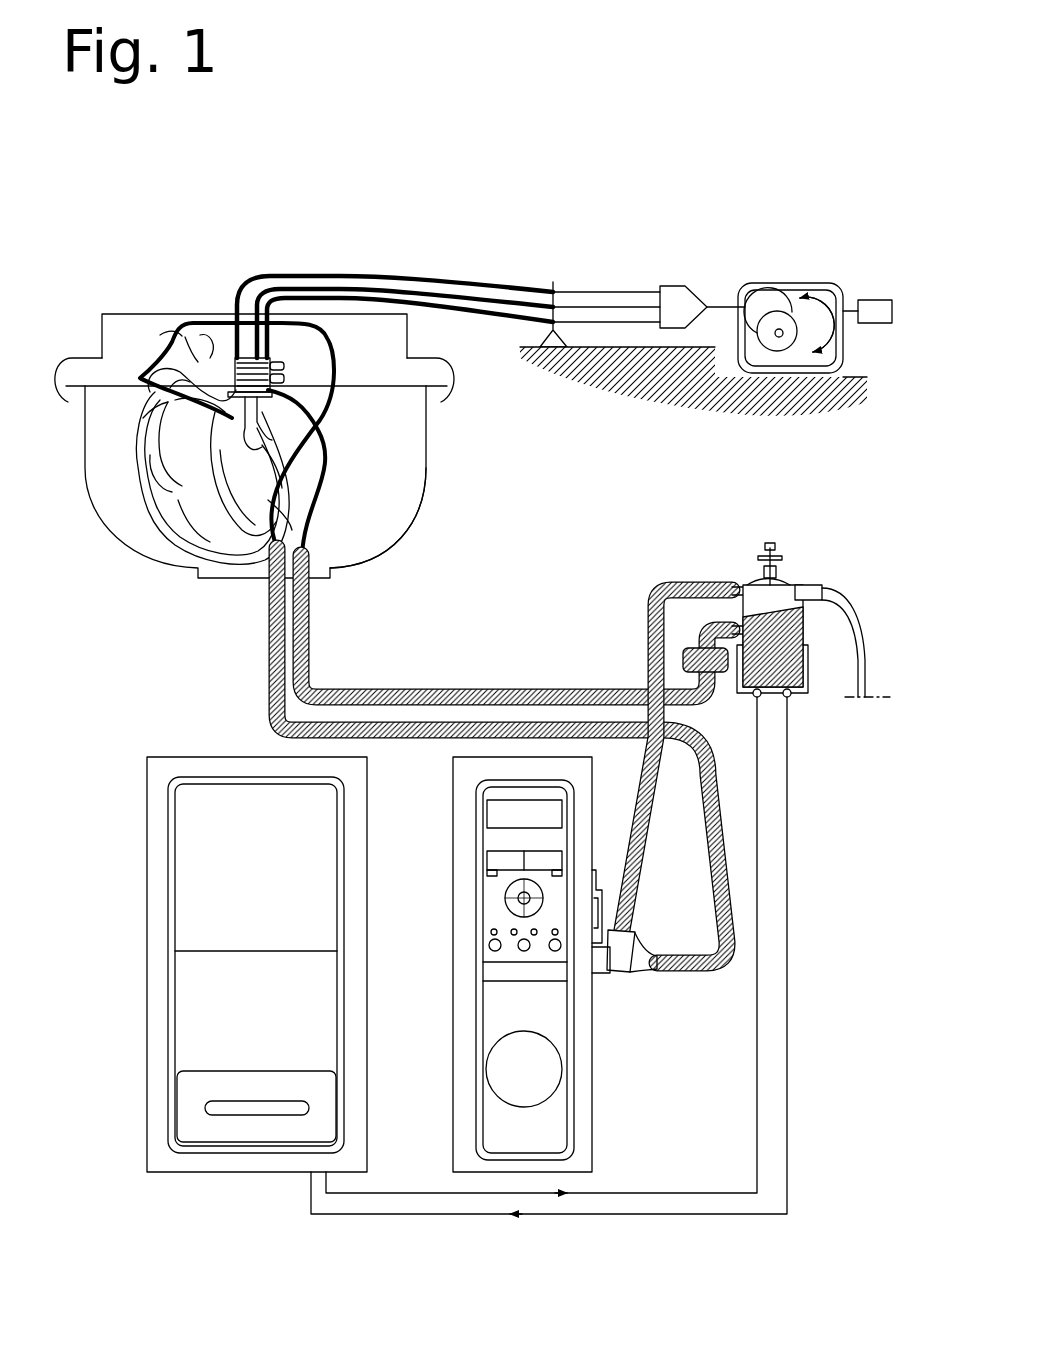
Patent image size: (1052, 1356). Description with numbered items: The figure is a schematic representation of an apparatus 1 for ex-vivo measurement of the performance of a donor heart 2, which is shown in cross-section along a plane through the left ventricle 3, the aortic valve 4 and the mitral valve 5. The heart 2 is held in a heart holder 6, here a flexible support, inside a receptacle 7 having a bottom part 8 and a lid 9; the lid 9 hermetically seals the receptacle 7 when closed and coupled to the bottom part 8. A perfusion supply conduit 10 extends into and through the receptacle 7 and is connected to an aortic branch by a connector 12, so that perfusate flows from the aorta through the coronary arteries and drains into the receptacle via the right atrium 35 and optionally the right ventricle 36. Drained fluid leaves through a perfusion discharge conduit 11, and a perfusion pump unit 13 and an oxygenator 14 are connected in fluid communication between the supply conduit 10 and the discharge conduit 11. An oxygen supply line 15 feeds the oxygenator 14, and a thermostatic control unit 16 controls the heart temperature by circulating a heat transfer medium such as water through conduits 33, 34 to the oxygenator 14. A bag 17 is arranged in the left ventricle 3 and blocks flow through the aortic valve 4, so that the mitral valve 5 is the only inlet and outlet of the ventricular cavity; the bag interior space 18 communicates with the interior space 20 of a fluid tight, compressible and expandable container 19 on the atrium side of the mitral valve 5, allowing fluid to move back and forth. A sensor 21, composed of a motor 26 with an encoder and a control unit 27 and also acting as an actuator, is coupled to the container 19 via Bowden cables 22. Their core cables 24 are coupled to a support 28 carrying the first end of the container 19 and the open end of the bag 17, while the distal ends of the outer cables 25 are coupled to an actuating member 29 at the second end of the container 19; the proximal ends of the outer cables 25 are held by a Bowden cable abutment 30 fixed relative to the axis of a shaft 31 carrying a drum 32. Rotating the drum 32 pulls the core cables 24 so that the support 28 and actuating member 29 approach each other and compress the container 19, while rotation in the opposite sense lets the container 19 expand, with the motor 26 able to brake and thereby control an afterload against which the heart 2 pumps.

The apparatus 1 is at (388, 210).
The donor heart 2 is at (132, 482).
The left ventricle 3 is at (258, 513).
The aortic valve 4 is at (212, 415).
The mitral valve 5 is at (262, 426).
The heart holder 6 is at (290, 525).
The receptacle 7 is at (423, 477).
The bottom part 8 is at (398, 522).
The lid 9 is at (107, 307).
The perfusion supply conduit 10 is at (310, 624).
The perfusion discharge conduit 11 is at (270, 645).
The connector 12 is at (167, 333).
The perfusion pump unit 13 is at (597, 1070).
The oxygenator 14 is at (797, 630).
The oxygen supply line 15 is at (840, 600).
The thermostatic control unit 16 is at (367, 942).
The bag 17 is at (267, 450).
The bag interior space 18 is at (236, 480).
The container 19 is at (213, 335).
The interior space 20 is at (366, 500).
The sensor 21 is at (780, 277).
The Bowden cables 22 is at (503, 315).
The core cables 24 is at (193, 333).
The outer cables 25 is at (402, 290).
The motor 26 is at (823, 300).
The control unit 27 is at (878, 300).
The support 28 is at (302, 298).
The actuating member 29 is at (272, 273).
The Bowden cable abutment 30 is at (553, 282).
The shaft 31 is at (777, 338).
The drum 32 is at (766, 323).
The conduit 33 is at (757, 1025).
The conduit 34 is at (787, 1068).
The right atrium 35 is at (160, 430).
The right ventricle 36 is at (190, 497).